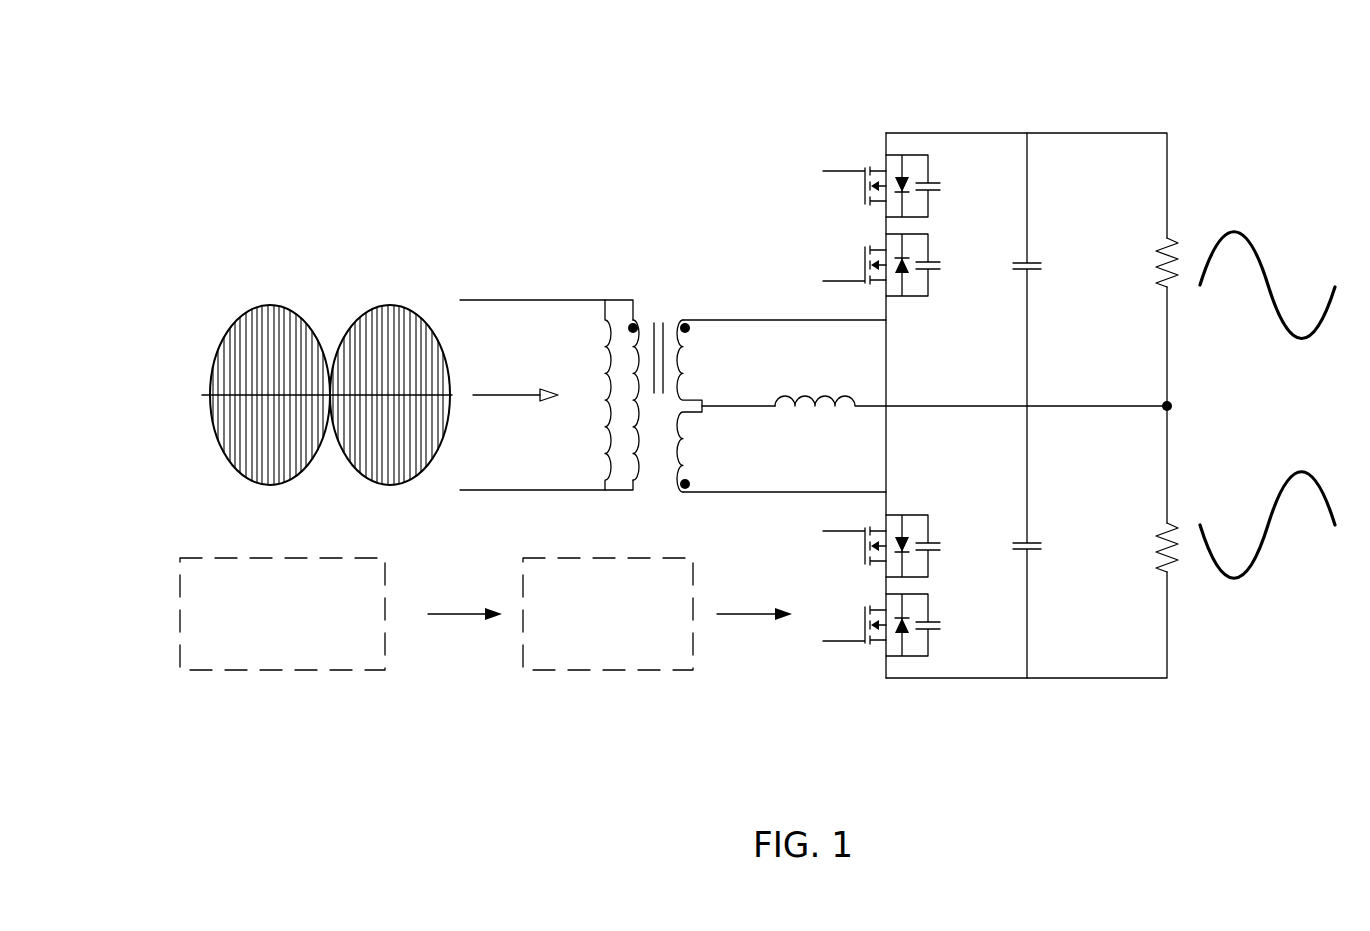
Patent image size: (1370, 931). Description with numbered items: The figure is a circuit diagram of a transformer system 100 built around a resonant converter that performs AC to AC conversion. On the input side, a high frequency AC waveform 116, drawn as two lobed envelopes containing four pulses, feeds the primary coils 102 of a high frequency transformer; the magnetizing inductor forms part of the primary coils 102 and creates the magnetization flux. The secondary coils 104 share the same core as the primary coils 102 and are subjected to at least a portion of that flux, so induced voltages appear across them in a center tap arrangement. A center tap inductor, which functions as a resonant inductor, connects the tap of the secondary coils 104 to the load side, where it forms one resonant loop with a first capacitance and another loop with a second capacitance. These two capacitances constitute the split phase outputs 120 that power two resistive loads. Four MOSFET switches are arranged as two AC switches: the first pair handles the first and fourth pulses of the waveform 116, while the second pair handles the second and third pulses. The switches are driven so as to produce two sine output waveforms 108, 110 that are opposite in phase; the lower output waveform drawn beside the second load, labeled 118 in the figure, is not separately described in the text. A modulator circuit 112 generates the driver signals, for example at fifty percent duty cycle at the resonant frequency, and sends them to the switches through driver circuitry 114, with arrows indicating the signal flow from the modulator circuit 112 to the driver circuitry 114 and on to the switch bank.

The transformer system 100 is at (1127, 80).
The primary coils 102 is at (602, 328).
The secondary coils 104 is at (700, 365).
The sine output waveform 108 is at (1265, 237).
The sine output waveform 110 is at (830, 88).
The modulator circuit 112 is at (222, 672).
The driver circuitry 114 is at (605, 670).
The high frequency AC waveform 116 is at (243, 303).
The second output waveform 118 is at (1292, 513).
The split phase outputs 120 is at (994, 220).